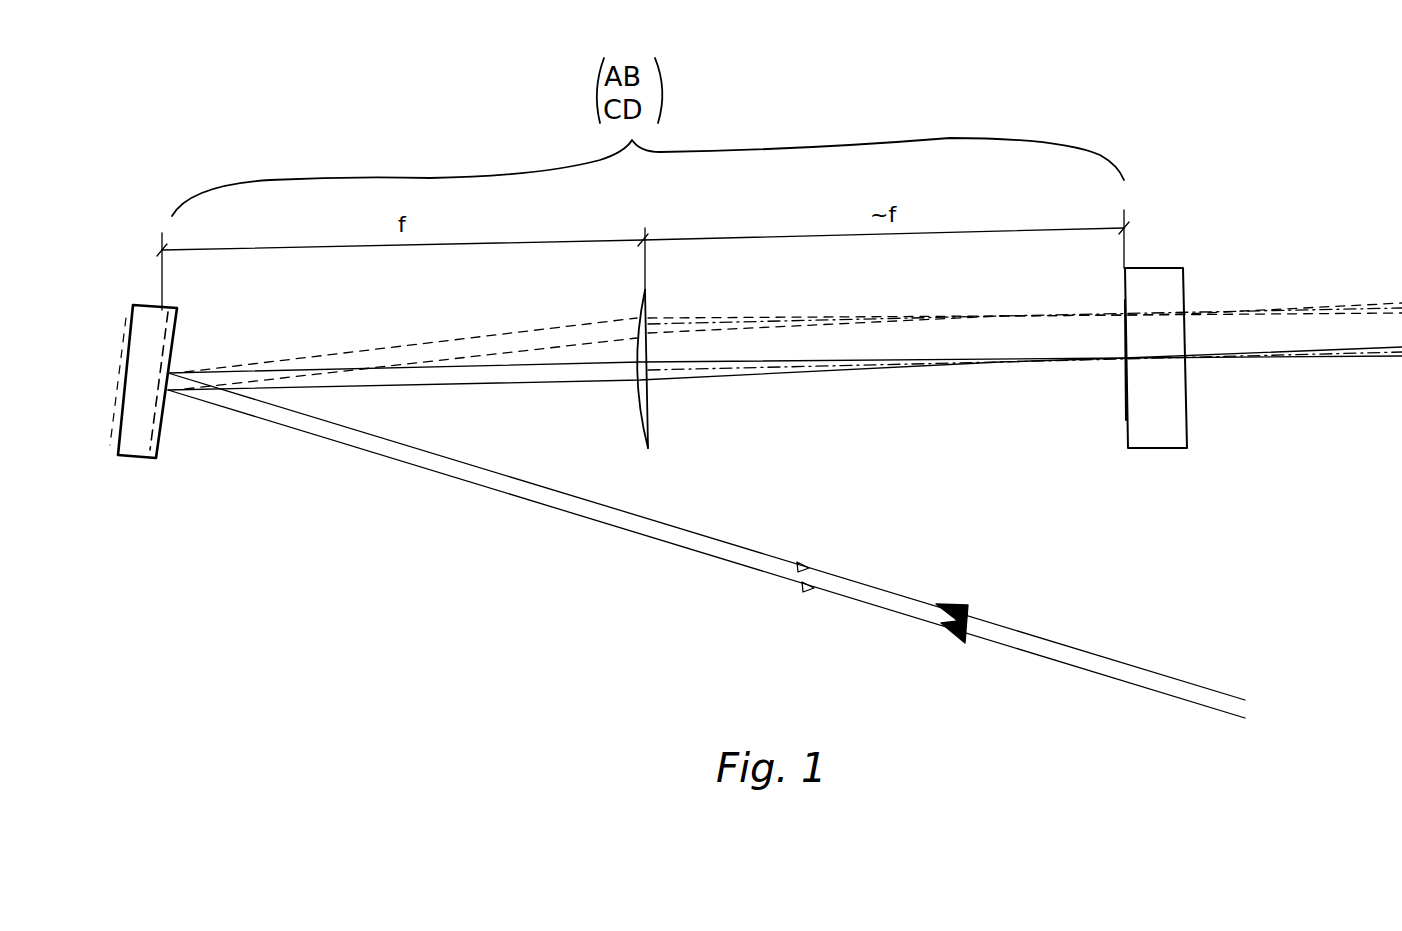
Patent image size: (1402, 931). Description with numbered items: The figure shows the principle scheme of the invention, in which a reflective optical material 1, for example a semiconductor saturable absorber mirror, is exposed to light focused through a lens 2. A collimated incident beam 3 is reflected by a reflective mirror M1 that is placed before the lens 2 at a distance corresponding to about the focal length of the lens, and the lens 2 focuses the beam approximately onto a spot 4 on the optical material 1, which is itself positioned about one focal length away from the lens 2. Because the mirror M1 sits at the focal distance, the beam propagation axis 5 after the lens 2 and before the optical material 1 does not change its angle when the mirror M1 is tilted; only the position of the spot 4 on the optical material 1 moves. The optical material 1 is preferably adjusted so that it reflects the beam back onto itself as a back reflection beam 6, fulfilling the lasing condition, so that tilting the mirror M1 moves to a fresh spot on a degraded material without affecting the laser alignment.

The reflective mirror M1 is at (142, 440).
The reflective optical material 1 is at (1175, 413).
The lens 2 is at (638, 407).
The incident beam 3 is at (972, 602).
The spot 4 is at (1120, 368).
The beam propagation axis 5 is at (757, 368).
The back reflection beam 6 is at (822, 590).